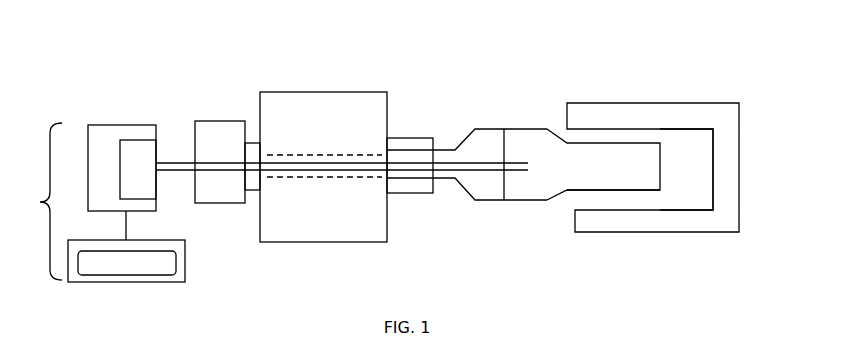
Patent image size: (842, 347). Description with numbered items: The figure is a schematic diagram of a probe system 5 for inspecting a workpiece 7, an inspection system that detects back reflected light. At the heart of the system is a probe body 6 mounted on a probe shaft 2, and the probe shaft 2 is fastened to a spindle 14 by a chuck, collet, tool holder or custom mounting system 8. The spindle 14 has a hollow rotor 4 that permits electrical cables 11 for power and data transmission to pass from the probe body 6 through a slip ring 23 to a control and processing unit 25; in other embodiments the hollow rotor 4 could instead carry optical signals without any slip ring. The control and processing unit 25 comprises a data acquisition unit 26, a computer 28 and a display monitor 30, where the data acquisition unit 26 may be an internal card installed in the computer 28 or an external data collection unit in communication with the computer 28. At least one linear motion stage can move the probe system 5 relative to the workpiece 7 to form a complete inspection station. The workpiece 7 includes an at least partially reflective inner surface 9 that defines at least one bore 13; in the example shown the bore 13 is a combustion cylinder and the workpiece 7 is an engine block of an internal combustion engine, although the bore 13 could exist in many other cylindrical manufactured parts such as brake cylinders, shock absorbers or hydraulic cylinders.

The probe shaft 2 is at (473, 130).
The hollow rotor 4 is at (327, 177).
The probe system 5 is at (435, 72).
The probe body 6 is at (538, 143).
The workpiece 7 is at (645, 112).
The mounting system 8 is at (412, 193).
The inner surface 9 is at (683, 128).
The electrical cables 11 is at (176, 173).
The bore 13 is at (617, 198).
The spindle 14 is at (318, 123).
The slip ring 23 is at (216, 135).
The control and processing unit 25 is at (35, 201).
The data acquisition unit 26 is at (142, 150).
The computer 28 is at (106, 133).
The display monitor 30 is at (126, 246).